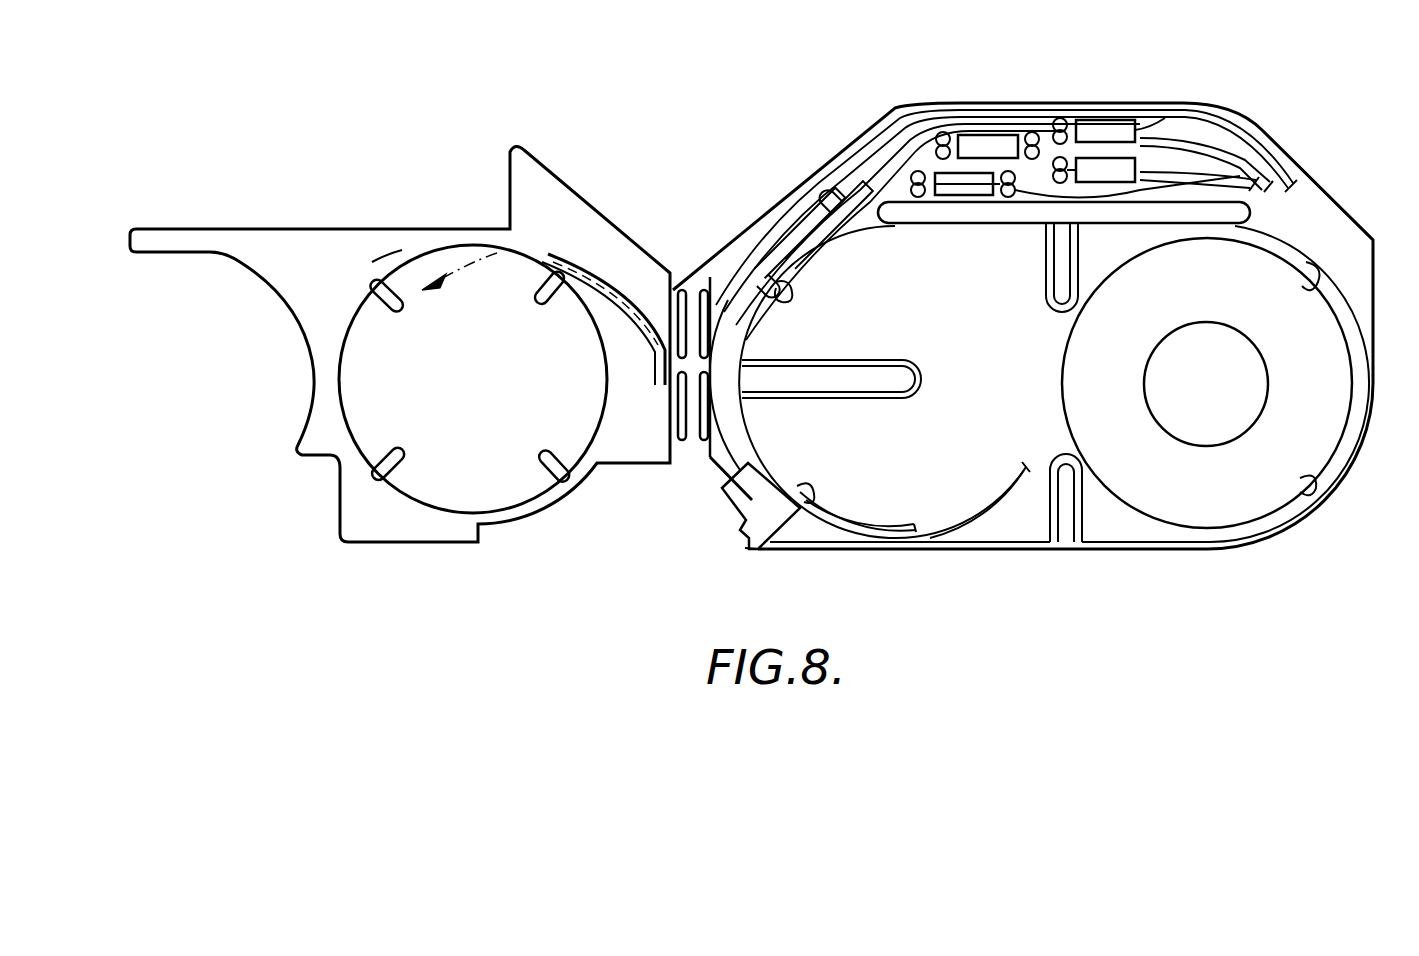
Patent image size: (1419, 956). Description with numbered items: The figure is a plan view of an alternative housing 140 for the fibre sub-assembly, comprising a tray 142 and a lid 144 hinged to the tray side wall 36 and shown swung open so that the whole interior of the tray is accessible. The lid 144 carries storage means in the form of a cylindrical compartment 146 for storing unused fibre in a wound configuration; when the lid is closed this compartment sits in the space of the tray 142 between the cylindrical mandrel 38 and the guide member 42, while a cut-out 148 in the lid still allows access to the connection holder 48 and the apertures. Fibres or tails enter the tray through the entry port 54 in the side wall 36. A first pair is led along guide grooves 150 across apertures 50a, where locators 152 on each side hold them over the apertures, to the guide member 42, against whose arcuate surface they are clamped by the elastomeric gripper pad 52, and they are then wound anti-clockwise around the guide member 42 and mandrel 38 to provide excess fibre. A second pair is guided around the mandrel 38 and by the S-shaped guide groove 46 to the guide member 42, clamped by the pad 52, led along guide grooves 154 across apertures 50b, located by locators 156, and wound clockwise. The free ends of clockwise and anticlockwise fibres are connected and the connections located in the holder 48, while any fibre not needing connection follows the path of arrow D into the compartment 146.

The lid 144 is at (290, 215).
The cut-out 148 is at (447, 226).
The cylindrical compartment 146 is at (512, 398).
The side wall 36 is at (752, 240).
The tray 142 is at (1074, 554).
The cylindrical mandrel 38 is at (1222, 506).
The guide grooves 154 is at (853, 148).
The apertures 50a is at (973, 140).
The apertures 50b is at (948, 192).
The locators 152 is at (938, 130).
The locators 156 is at (917, 198).
The guide grooves 150 is at (1212, 128).
The holder 48 is at (970, 212).
The entry port 54 is at (1378, 266).
The guide member 42 is at (812, 514).
The guide groove 46 is at (984, 522).
The gripper pad 52 is at (786, 504).
The housing 140 is at (736, 550).